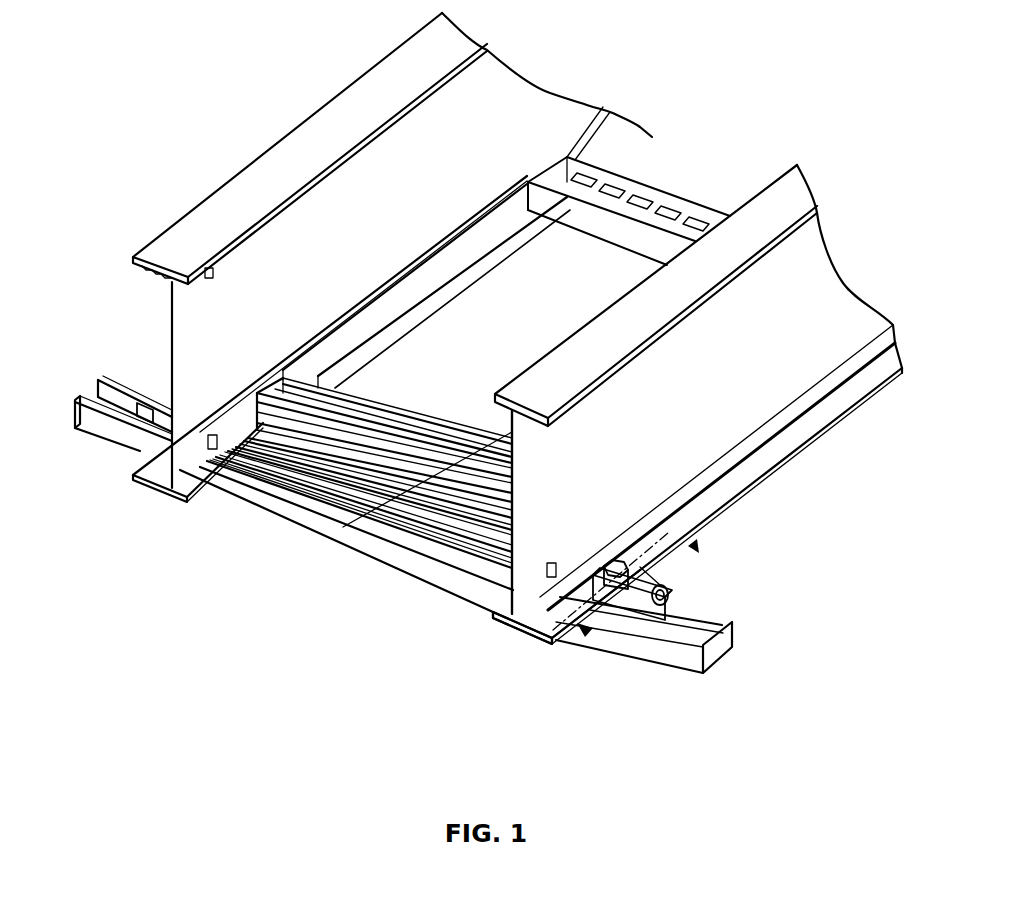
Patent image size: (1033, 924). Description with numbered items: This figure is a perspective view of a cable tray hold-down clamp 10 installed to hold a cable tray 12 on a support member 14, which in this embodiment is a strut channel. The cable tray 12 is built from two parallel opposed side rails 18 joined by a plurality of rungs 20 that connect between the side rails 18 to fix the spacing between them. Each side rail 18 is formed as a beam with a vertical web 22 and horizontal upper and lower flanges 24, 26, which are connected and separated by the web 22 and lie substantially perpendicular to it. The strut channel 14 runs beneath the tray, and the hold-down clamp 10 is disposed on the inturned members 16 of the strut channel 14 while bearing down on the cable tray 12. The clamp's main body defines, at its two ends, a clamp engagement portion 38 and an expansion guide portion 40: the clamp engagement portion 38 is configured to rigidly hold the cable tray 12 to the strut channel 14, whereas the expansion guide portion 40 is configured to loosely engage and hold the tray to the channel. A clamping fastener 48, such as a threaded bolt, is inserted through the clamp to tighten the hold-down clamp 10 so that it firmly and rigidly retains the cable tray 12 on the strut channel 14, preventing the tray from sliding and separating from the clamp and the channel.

The cable tray hold-down clamp 10 is at (478, 560).
The cable tray 12 is at (678, 118).
The support member 14 is at (413, 550).
The inturned members 16 is at (707, 643).
The side rails 18 is at (153, 478).
The rungs 20 is at (665, 200).
The vertical web 22 is at (773, 367).
The upper flange 24 is at (343, 527).
The lower flange 26 is at (548, 630).
The clamp engagement portion 38 is at (593, 612).
The expansion guide portion 40 is at (647, 588).
The clamping fastener 48 is at (640, 567).